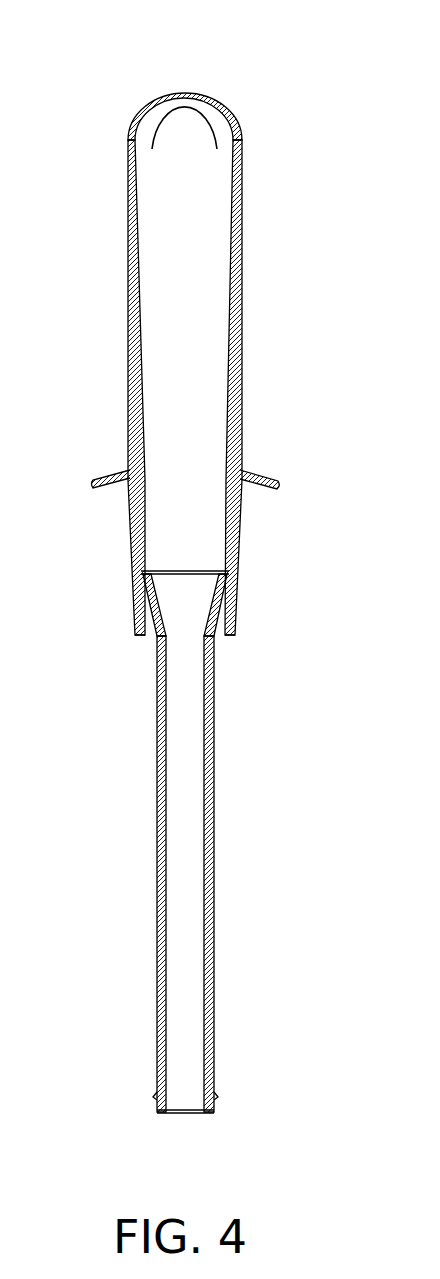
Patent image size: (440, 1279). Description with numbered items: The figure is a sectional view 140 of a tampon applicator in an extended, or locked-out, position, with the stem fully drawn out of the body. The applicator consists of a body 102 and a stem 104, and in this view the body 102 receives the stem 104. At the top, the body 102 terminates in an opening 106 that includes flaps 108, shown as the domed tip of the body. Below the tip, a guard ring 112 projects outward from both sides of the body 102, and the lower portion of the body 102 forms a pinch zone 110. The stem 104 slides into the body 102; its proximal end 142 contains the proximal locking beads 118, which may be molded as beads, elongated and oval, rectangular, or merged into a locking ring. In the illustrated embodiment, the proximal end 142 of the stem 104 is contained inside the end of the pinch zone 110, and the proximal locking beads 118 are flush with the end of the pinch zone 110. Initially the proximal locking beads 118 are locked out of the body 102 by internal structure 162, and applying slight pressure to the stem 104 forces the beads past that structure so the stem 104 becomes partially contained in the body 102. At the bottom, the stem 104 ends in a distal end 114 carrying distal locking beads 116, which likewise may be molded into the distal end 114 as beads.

The body 102 is at (240, 318).
The stem 104 is at (215, 742).
The opening 106 is at (192, 80).
The flaps 108 is at (217, 118).
The pinch zone 110 is at (238, 553).
The guard ring 112 is at (279, 482).
The distal end 114 is at (157, 1110).
The distal locking beads 116 is at (152, 1094).
The proximal locking beads 118 is at (155, 640).
The sectional view 140 is at (304, 134).
The proximal end 142 is at (143, 573).
The internal structure 162 is at (415, 582).